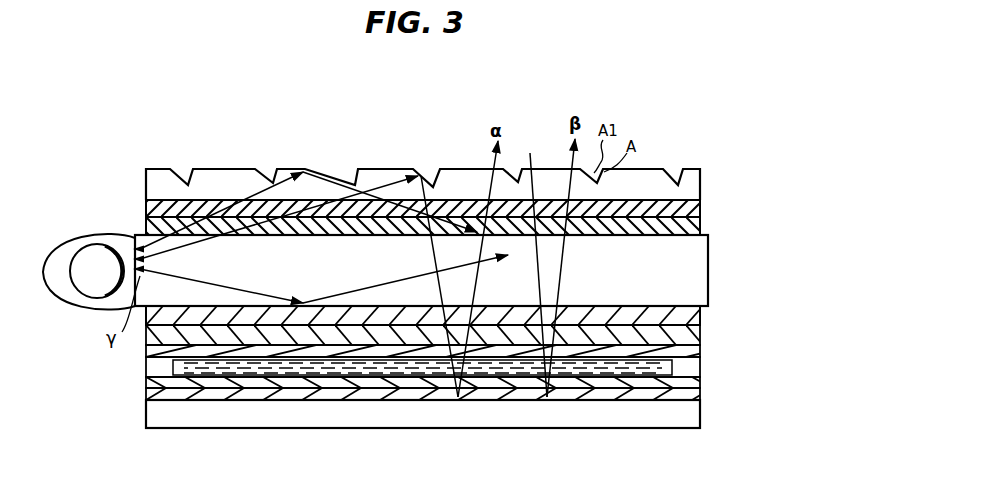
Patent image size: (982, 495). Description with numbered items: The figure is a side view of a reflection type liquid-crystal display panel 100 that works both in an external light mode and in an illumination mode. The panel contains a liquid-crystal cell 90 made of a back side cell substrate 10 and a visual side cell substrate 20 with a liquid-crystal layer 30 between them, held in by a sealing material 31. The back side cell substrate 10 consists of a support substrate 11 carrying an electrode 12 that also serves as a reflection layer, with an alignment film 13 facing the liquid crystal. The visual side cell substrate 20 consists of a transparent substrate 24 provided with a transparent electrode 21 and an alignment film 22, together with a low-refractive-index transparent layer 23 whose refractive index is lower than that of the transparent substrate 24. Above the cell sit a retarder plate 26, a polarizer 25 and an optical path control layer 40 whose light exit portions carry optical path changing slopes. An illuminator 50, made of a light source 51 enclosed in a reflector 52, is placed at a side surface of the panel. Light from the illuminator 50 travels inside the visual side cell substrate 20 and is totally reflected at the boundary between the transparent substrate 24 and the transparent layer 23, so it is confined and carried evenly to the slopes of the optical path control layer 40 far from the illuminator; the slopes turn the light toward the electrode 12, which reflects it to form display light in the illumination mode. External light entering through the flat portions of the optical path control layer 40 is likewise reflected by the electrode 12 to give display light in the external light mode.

The liquid-crystal display panel 100 is at (839, 198).
The liquid-crystal cell 90 is at (796, 302).
The back side cell substrate 10 is at (756, 375).
The support substrate 11 is at (704, 423).
The electrode 12 is at (704, 401).
The alignment film 13 is at (704, 386).
The visual side cell substrate 20 is at (756, 262).
The transparent electrode 21 is at (704, 338).
The alignment film 22 is at (704, 355).
The low-refractive-index transparent layer 23 is at (704, 316).
The transparent substrate 24 is at (710, 273).
The polarizer 25 is at (704, 209).
The retarder plate 26 is at (704, 232).
The liquid-crystal layer 30 is at (318, 368).
The sealing material 31 is at (449, 413).
The optical path control layer 40 is at (704, 182).
The illuminator 50 is at (86, 246).
The light source 51 is at (80, 263).
The reflector 52 is at (76, 311).